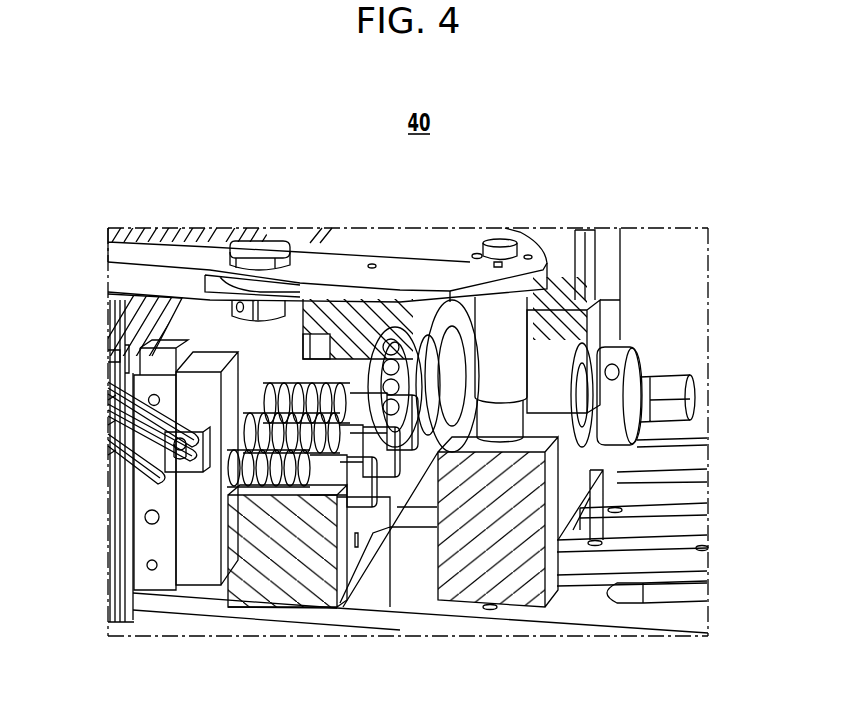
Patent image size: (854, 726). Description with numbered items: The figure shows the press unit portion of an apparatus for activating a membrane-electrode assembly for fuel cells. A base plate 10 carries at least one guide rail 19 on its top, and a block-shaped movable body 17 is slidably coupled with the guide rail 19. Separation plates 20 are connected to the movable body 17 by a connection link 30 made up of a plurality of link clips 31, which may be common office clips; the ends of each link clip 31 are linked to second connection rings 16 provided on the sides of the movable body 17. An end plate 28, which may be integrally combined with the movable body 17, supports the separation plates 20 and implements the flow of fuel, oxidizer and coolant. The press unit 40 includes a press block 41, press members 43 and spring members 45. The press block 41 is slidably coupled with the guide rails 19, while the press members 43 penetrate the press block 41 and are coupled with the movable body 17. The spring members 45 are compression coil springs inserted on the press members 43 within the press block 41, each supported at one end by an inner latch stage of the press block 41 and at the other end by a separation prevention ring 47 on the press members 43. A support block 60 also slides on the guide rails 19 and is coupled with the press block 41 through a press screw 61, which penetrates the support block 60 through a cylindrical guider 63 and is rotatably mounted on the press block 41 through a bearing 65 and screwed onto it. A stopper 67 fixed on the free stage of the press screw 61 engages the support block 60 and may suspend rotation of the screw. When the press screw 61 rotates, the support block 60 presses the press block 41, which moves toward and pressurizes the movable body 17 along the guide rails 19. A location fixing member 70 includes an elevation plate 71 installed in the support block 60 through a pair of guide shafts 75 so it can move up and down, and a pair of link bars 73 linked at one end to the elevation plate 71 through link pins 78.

The base plate 10 is at (373, 600).
The second connection ring 16 is at (180, 457).
The movable body 17 is at (172, 632).
The guide rail 19 is at (670, 550).
The separation plate 20 is at (100, 362).
The end plate 28 is at (122, 633).
The connection link 30 is at (124, 472).
The link clip 31 is at (120, 454).
The press unit 40 is at (240, 622).
The press block 41 is at (243, 570).
The press member 43 is at (363, 483).
The spring member 45 is at (298, 472).
The separation prevention ring 47 is at (243, 457).
The support block 60 is at (517, 573).
The press screw 61 is at (673, 393).
The cylindrical guider 63 is at (556, 362).
The bearing 65 is at (395, 335).
The stopper 67 is at (613, 353).
The location fixing member 70 is at (362, 252).
The elevation plate 71 is at (457, 245).
The link bar 73 is at (150, 255).
The guide shaft 75 is at (520, 338).
The link pin 78 is at (262, 246).